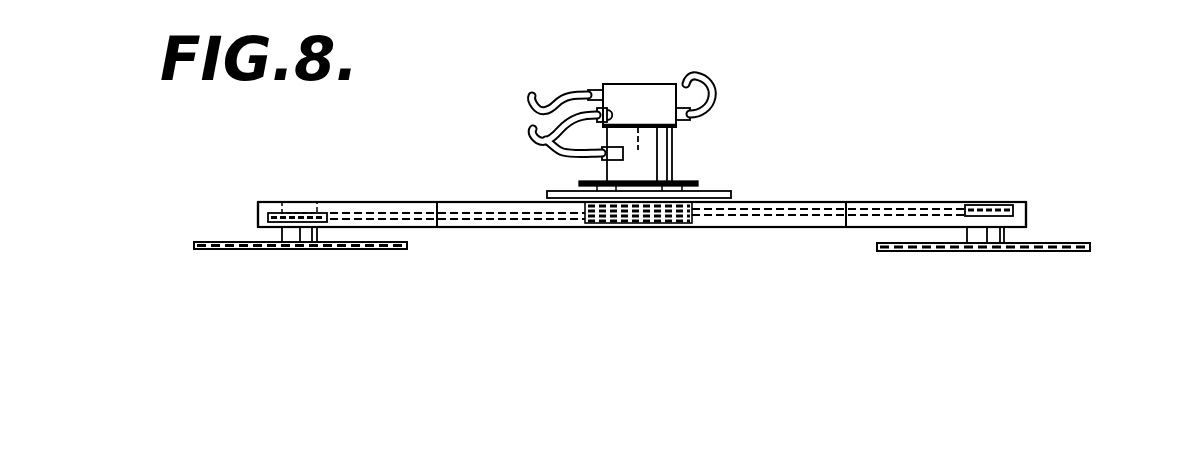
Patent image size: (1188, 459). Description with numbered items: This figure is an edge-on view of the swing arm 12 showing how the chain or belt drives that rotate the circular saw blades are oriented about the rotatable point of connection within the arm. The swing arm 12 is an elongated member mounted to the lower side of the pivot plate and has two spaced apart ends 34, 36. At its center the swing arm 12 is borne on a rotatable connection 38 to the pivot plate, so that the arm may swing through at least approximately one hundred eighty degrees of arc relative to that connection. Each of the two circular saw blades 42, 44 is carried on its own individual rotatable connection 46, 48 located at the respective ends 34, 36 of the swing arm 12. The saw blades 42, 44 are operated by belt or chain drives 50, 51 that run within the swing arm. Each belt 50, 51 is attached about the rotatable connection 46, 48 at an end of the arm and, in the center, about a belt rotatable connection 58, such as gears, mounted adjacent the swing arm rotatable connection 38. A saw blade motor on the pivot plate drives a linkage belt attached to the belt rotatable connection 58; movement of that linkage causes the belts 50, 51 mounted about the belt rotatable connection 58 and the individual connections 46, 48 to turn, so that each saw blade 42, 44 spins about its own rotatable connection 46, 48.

The swing arm 12 is at (454, 208).
The swing arm end 34 is at (272, 211).
The swing arm end 36 is at (1026, 212).
The rotatable connection 38 is at (638, 103).
The circular saw blade 42 is at (348, 250).
The circular saw blade 44 is at (960, 251).
The rotatable connection 46 is at (304, 204).
The rotatable connection 48 is at (990, 207).
The belt or chain drive 50 is at (497, 228).
The belt or chain drive 51 is at (822, 212).
The belt rotatable connection 58 is at (587, 203).